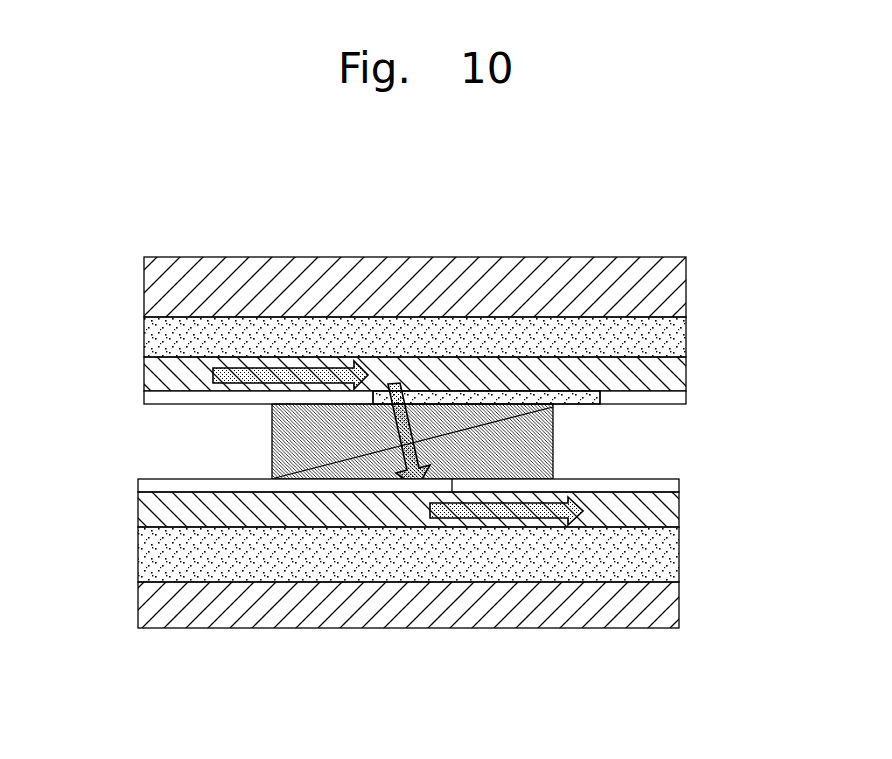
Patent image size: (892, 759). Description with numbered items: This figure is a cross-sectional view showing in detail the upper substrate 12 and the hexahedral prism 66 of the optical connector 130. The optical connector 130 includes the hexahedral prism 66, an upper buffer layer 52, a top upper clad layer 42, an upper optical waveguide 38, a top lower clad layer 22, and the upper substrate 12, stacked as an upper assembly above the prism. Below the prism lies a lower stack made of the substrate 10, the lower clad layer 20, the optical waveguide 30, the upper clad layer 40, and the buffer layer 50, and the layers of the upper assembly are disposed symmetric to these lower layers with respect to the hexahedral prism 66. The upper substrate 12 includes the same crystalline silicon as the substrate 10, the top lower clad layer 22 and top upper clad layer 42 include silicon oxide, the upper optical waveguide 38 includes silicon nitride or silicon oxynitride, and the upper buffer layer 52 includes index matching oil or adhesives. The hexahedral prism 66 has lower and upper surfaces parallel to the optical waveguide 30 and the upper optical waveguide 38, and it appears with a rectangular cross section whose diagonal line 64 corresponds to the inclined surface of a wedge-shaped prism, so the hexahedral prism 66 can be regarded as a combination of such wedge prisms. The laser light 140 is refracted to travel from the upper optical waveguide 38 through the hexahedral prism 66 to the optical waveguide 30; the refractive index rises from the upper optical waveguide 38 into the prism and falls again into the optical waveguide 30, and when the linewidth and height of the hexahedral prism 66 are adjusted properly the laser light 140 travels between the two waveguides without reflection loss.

The substrate 10 is at (670, 588).
The upper substrate 12 is at (672, 270).
The lower clad layer 20 is at (670, 548).
The top lower clad layer 22 is at (672, 323).
The optical waveguide 30 is at (670, 512).
The upper optical waveguide 38 is at (672, 370).
The upper clad layer 40 is at (670, 486).
The top upper clad layer 42 is at (670, 397).
The buffer layer 50 is at (410, 551).
The upper buffer layer 52 is at (560, 404).
The diagonal line 64 is at (355, 456).
The hexahedral prism 66 is at (506, 441).
The optical connector 130 is at (472, 368).
The laser light 140 is at (488, 518).